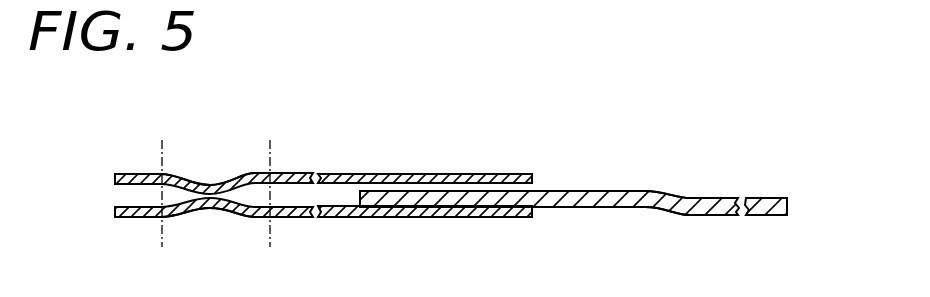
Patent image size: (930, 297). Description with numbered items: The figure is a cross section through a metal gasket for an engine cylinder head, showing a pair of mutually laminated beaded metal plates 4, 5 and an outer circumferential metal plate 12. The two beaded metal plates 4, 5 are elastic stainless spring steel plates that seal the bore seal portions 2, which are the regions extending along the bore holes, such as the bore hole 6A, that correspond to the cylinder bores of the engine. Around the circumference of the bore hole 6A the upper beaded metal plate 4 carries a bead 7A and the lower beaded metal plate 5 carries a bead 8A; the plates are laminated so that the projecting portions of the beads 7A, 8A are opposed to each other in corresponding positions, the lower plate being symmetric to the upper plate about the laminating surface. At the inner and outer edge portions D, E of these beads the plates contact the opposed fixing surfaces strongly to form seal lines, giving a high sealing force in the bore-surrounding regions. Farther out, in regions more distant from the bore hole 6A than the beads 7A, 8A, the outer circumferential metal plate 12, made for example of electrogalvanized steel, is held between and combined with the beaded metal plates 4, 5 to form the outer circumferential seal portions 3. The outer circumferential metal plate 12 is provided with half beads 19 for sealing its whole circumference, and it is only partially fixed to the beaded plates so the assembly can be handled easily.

The bore seal portion 2 is at (294, 158).
The outer circumferential seal portion 3 is at (605, 186).
The beaded metal plate 4 is at (340, 176).
The beaded metal plate 5 is at (338, 216).
The bore hole 6A is at (115, 212).
The bead 7A is at (208, 183).
The bead 8A is at (211, 205).
The outer circumferential metal plate 12 is at (572, 203).
The half bead 19 is at (672, 205).
The inner edge portion D is at (163, 180).
The outer edge portion E is at (270, 180).